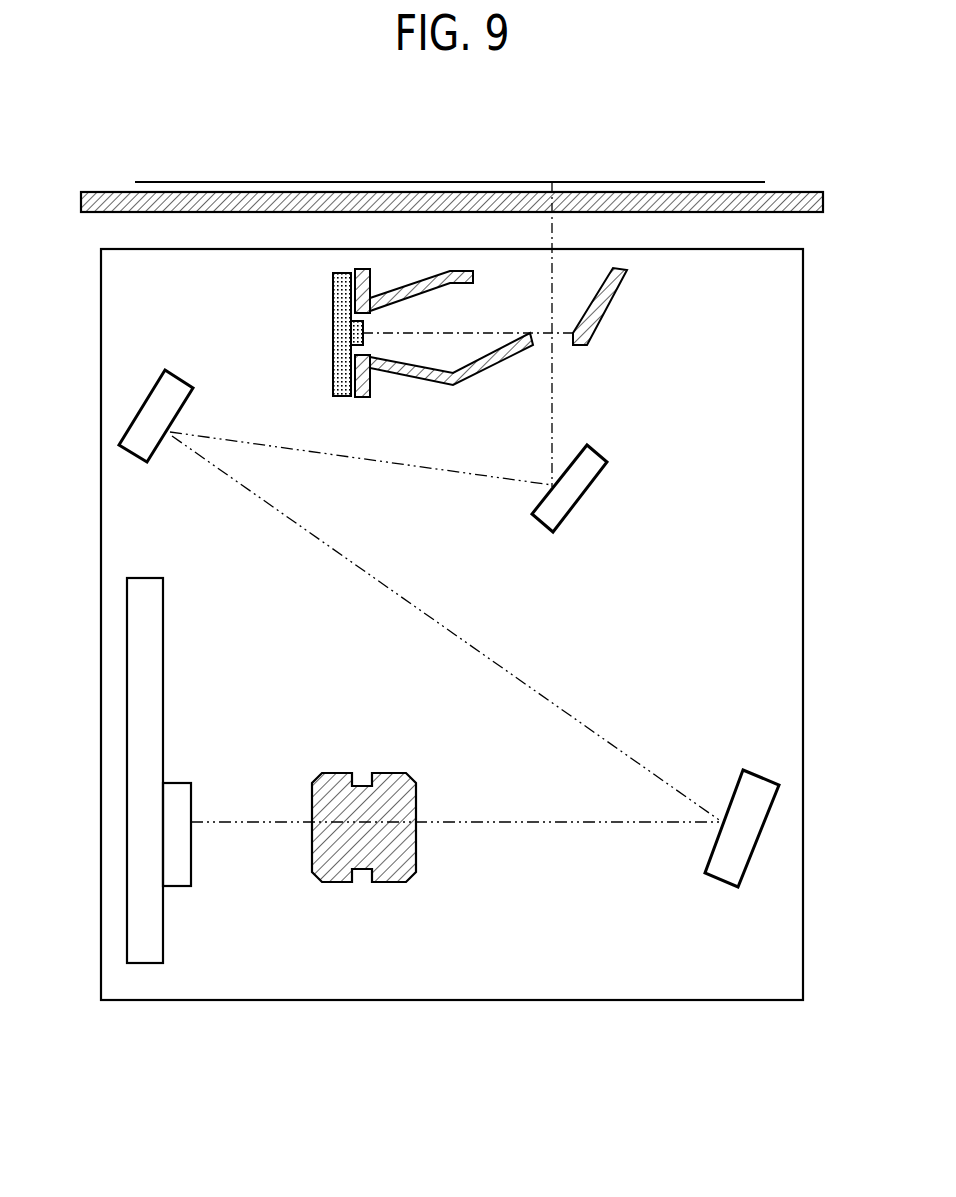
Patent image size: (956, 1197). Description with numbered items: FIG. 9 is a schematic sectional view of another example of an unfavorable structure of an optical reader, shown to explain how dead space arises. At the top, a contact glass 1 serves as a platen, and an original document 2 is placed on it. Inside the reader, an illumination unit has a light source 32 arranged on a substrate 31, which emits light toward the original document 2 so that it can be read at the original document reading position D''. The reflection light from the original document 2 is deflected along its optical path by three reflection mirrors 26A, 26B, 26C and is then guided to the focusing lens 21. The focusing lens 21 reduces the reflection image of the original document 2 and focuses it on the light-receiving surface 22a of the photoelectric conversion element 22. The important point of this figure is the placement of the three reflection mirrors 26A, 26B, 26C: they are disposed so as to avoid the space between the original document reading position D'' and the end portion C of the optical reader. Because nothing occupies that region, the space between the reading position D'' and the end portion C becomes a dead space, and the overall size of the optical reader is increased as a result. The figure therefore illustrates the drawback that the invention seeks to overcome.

The contact glass 1 is at (97, 195).
The original document 2 is at (245, 182).
The end portion C is at (803, 298).
The original document reading position D'' is at (557, 322).
The focusing lens 21 is at (393, 870).
The photoelectric conversion element 22 is at (145, 958).
The light-receiving surface 22a is at (173, 833).
The reflection mirror 26A is at (582, 498).
The reflection mirror 26B is at (145, 413).
The reflection mirror 26C is at (725, 873).
The substrate 31 is at (341, 283).
The light source 32 is at (354, 334).